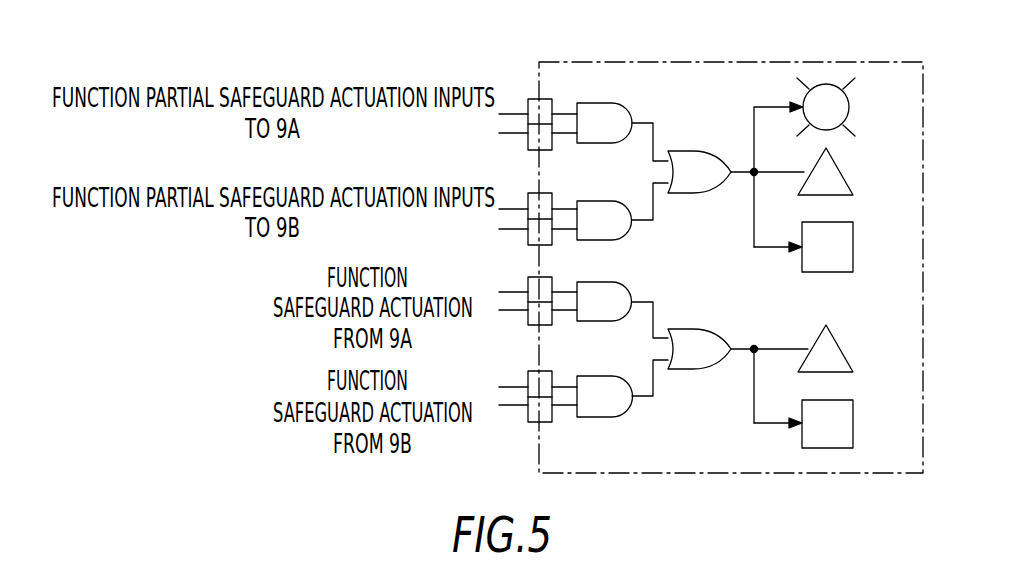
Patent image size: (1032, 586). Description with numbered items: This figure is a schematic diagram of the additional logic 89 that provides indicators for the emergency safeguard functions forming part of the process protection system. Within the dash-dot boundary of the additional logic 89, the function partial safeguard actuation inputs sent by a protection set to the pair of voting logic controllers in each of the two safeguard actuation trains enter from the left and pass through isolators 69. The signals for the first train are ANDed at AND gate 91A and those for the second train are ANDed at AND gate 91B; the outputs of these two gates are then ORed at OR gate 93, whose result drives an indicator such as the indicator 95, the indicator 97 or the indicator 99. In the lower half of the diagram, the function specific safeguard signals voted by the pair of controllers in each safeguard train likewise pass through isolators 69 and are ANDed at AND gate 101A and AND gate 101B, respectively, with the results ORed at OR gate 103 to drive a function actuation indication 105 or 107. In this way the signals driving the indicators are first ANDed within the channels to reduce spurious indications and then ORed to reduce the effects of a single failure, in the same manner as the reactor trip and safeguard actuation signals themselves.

The isolator 69 is at (528, 100).
The additional logic 89 is at (736, 38).
The AND gate 91A is at (590, 103).
The AND gate 91B is at (590, 201).
The OR gate 93 is at (708, 151).
The indicator 95 is at (849, 111).
The indicator 97 is at (842, 165).
The indicator 99 is at (853, 247).
The AND gate 101A is at (595, 282).
The AND gate 101B is at (615, 417).
The OR gate 103 is at (706, 329).
The function actuation indication 105 is at (847, 356).
The function actuation indication 107 is at (853, 437).